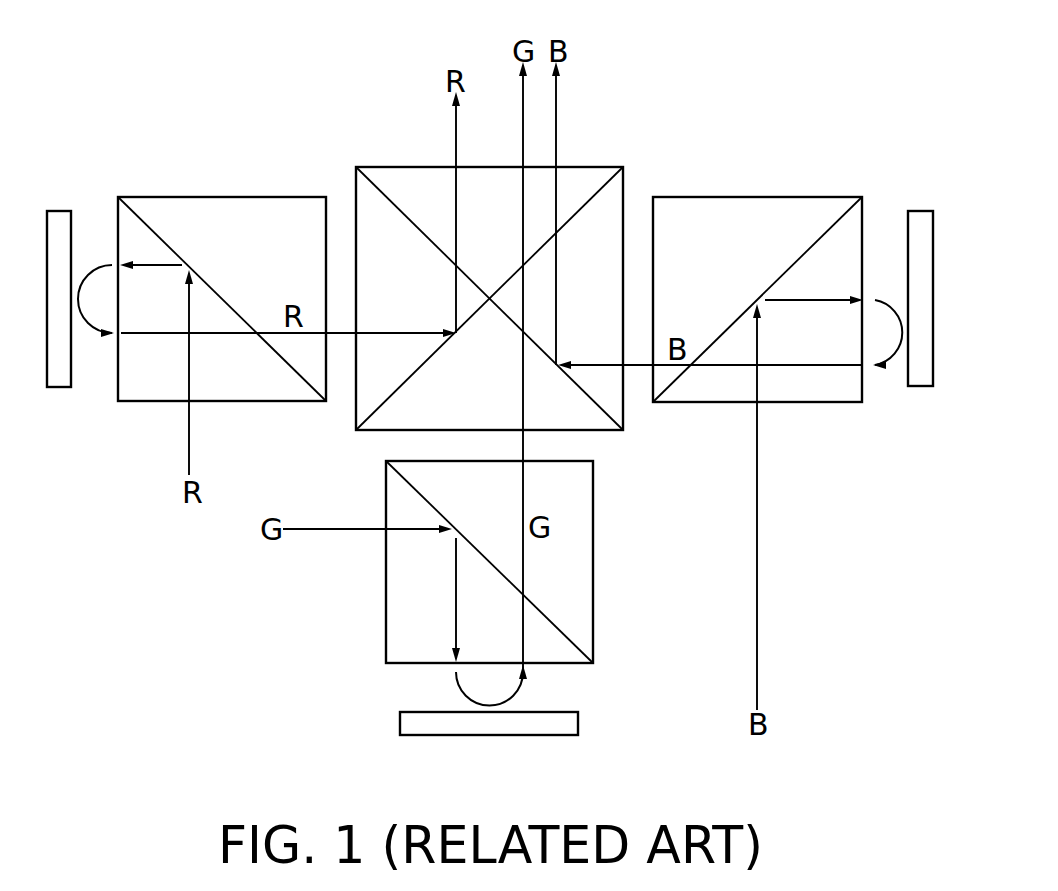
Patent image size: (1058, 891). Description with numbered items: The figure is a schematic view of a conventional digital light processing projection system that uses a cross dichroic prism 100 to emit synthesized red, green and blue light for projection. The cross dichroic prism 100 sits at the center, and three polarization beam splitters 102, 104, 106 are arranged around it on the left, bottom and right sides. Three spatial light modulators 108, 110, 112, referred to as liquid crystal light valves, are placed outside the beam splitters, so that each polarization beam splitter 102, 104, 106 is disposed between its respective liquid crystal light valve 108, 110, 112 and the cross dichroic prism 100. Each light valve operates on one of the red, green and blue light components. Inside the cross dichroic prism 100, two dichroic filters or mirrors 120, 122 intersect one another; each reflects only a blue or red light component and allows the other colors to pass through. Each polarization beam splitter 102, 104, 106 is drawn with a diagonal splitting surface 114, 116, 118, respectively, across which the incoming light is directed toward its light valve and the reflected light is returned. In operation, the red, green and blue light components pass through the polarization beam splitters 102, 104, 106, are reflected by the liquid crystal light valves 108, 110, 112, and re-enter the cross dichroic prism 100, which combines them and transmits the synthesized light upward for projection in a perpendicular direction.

The cross dichroic prism 100 is at (400, 166).
The polarization beam splitter 102 is at (223, 197).
The polarization beam splitter 104 is at (593, 558).
The polarization beam splitter 106 is at (757, 197).
The spatial light modulator 108 is at (58, 211).
The spatial light modulator 110 is at (488, 735).
The spatial light modulator 112 is at (920, 387).
The polarization splitting surface of beam splitter 102 114 is at (207, 278).
The polarization splitting surface of beam splitter 104 116 is at (428, 500).
The polarization splitting surface of beam splitter 106 118 is at (803, 253).
The dichroic filter 120 is at (415, 228).
The dichroic filter 122 is at (580, 208).